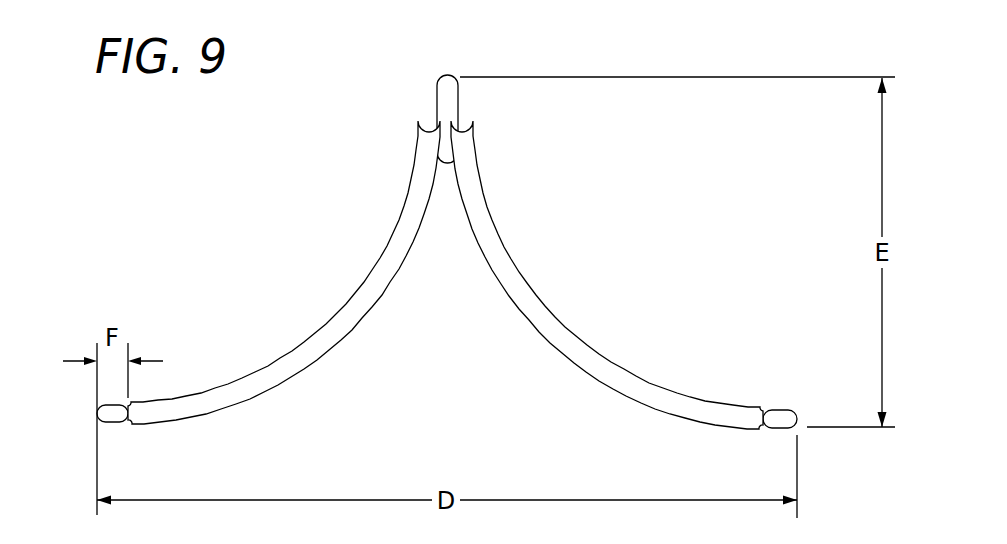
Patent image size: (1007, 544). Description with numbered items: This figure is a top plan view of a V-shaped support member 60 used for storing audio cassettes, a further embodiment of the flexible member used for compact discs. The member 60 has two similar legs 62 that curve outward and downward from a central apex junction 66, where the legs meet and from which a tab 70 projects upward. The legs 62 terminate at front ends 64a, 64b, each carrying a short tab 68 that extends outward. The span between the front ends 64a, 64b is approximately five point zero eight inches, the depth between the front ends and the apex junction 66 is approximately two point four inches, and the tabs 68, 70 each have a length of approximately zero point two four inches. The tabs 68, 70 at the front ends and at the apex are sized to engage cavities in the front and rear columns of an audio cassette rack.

The retainer 60 is at (338, 213).
The legs 62 is at (293, 343).
The first leg end 64a is at (139, 439).
The second leg end 64b is at (750, 443).
The apex junction 66 is at (491, 99).
The end tips 68 is at (96, 409).
The central post 70 is at (437, 78).